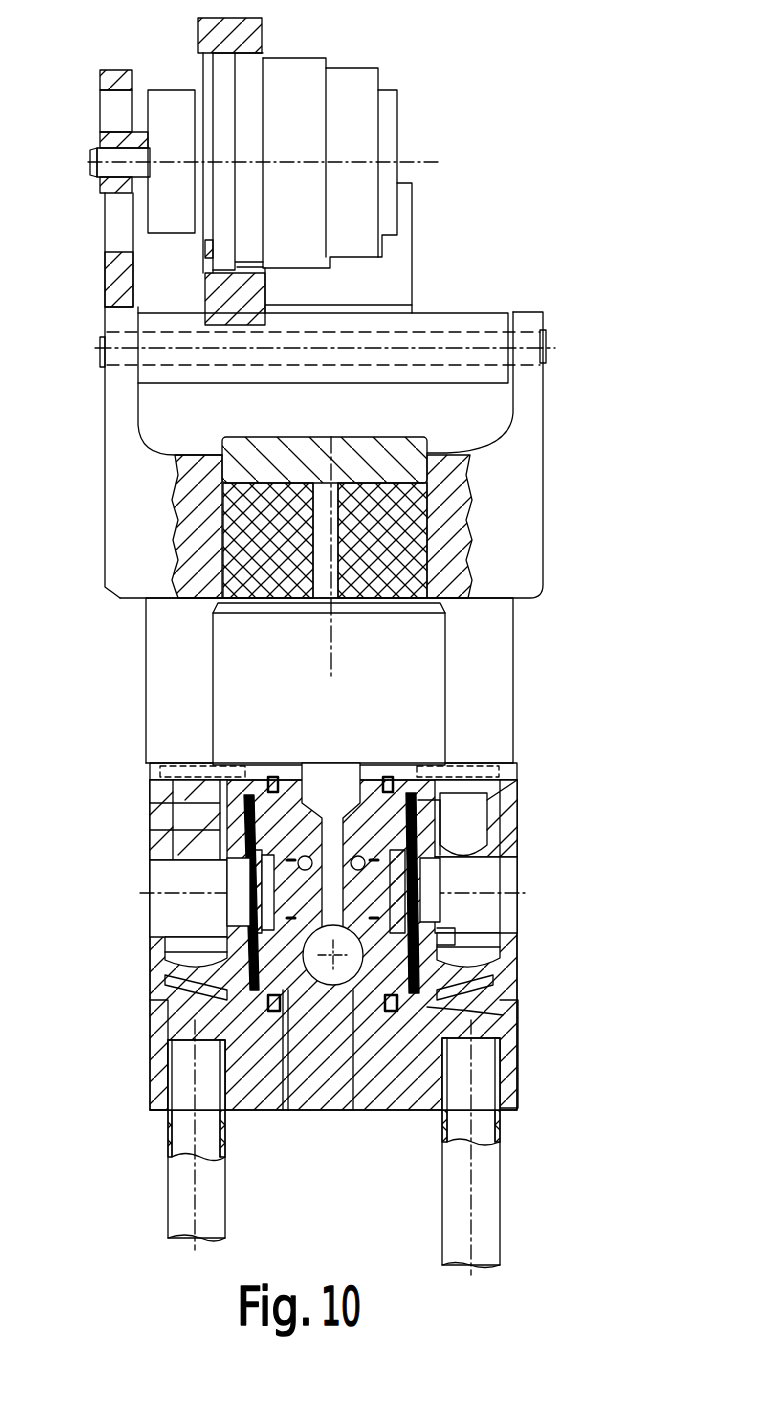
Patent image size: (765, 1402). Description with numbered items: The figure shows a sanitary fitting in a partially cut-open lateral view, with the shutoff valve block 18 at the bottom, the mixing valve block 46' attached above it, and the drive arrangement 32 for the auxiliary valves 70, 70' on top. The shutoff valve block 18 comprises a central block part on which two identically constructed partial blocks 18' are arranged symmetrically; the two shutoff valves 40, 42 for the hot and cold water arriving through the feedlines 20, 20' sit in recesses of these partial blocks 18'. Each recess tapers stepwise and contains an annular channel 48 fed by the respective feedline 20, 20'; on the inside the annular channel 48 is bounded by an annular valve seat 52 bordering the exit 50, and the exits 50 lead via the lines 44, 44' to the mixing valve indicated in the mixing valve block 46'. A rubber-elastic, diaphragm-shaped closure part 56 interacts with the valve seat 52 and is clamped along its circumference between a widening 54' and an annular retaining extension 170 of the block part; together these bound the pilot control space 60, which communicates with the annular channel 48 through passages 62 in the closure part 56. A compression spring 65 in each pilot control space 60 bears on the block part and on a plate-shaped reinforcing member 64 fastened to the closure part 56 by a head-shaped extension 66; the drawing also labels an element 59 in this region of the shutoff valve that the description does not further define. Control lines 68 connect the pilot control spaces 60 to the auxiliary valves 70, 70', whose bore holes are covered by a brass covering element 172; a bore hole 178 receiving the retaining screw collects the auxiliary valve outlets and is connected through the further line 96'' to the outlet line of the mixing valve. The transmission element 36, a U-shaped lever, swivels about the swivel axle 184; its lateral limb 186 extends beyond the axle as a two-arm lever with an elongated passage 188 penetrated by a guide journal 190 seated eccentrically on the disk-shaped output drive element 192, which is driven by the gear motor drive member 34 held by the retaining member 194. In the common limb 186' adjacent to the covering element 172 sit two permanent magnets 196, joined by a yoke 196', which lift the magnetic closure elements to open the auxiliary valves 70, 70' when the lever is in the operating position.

The shutoff valve block 18 is at (380, 1055).
The partial block 18' is at (340, 1097).
The feedline 20 is at (162, 1135).
The feedline 20' is at (506, 1147).
The drive arrangement 32 is at (460, 189).
The drive member 34 is at (368, 82).
The transmission element 36 is at (549, 513).
The shutoff valve 40 is at (130, 948).
The shutoff valve 42 is at (577, 893).
The line 44 is at (158, 820).
The line 44' is at (508, 811).
The mixing valve block 46' is at (378, 680).
The annular channel 48 is at (230, 1000).
The exit 50 is at (175, 917).
The annular valve seat 52 is at (215, 965).
The widening 54' is at (498, 827).
The closure part 56 is at (457, 930).
The spacer 59 is at (225, 862).
The pilot control space 60 is at (287, 777).
The passage 62 is at (243, 850).
The reinforcing member 64 is at (293, 770).
The compression spring 65 is at (288, 1000).
The head-shaped extension 66 is at (240, 890).
The control line 68 is at (347, 780).
The auxiliary valve 70 is at (143, 719).
The auxiliary valve 70' is at (498, 723).
The line 96'' is at (320, 1070).
The retaining extension 170 is at (273, 777).
The covering element 172 is at (227, 640).
The bore hole 178 is at (353, 1110).
The swivel axle 184 is at (552, 342).
The lateral limb 186 is at (129, 395).
The common limb 186' is at (372, 455).
The passage 188 is at (112, 210).
The guide journal 190 is at (100, 140).
The output drive element 192 is at (166, 105).
The retaining member 194 is at (250, 42).
The permanent magnet 196 is at (327, 526).
The yoke 196' is at (321, 438).